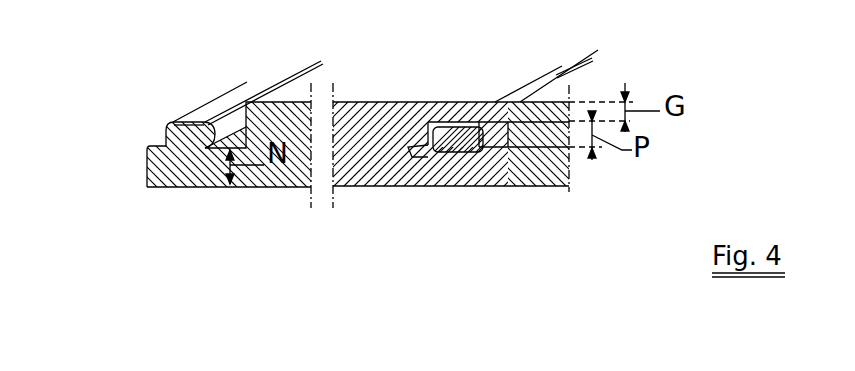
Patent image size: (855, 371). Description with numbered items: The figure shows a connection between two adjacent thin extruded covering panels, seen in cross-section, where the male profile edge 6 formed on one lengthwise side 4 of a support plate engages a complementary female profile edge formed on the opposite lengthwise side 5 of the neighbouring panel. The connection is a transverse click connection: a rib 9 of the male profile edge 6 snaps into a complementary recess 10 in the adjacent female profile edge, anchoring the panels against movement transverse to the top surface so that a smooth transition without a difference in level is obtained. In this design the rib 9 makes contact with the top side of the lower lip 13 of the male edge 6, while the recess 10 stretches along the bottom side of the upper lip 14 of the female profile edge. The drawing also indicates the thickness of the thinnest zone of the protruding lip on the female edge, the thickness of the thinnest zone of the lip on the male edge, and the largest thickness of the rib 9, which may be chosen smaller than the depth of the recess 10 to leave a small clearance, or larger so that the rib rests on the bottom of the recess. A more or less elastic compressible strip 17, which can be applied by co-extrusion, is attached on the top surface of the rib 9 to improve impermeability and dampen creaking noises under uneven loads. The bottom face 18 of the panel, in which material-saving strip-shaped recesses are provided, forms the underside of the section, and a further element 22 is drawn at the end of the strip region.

The lengthwise side 4 is at (147, 167).
The lengthwise side 5 is at (531, 77).
The male profile edge 6 is at (204, 163).
The rib 9 is at (208, 134).
The recess 10 is at (428, 143).
The lower lip 13 is at (190, 179).
The upper lip 14 is at (496, 136).
The compressible strip 17 is at (222, 98).
The bottom face 18 is at (532, 186).
The strip end 22 is at (598, 50).